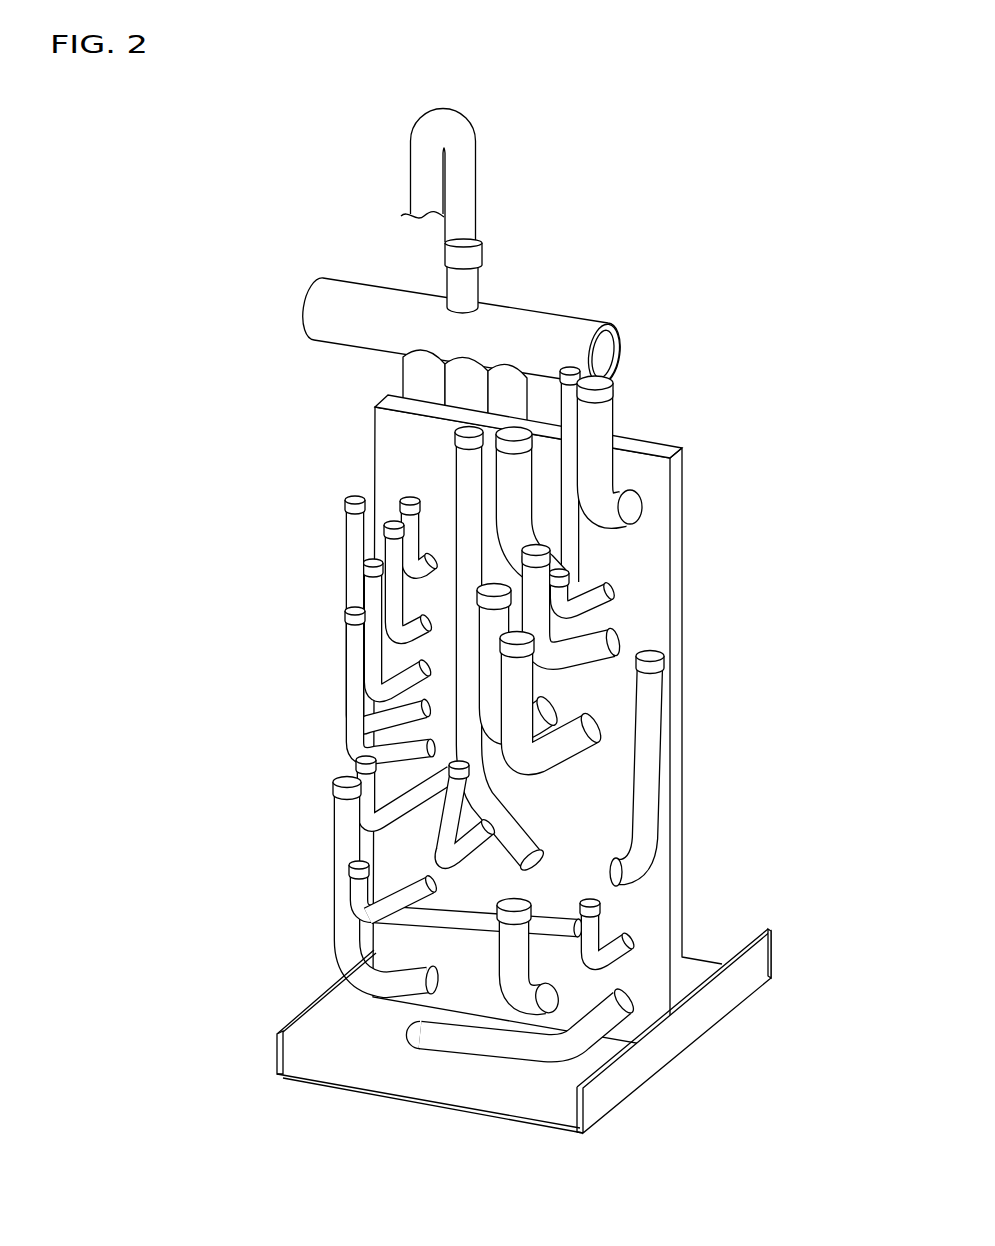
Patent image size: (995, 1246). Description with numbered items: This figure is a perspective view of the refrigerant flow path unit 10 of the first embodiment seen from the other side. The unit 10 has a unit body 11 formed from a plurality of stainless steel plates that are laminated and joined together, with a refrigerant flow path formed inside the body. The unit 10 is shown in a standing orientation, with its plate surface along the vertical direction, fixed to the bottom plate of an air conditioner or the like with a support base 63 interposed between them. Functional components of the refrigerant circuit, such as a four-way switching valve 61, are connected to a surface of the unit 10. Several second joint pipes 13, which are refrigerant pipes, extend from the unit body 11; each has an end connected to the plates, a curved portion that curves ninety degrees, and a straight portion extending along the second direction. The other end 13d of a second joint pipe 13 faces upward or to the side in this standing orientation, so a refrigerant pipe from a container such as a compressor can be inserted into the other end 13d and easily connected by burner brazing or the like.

The refrigerant flow path unit 10 is at (524, 620).
The unit body 11 is at (677, 567).
The second joint pipe 13 is at (520, 726).
The other end of the second joint pipe 13d is at (663, 667).
The four-way switching valve 61 is at (543, 325).
The support base 63 is at (644, 1062).